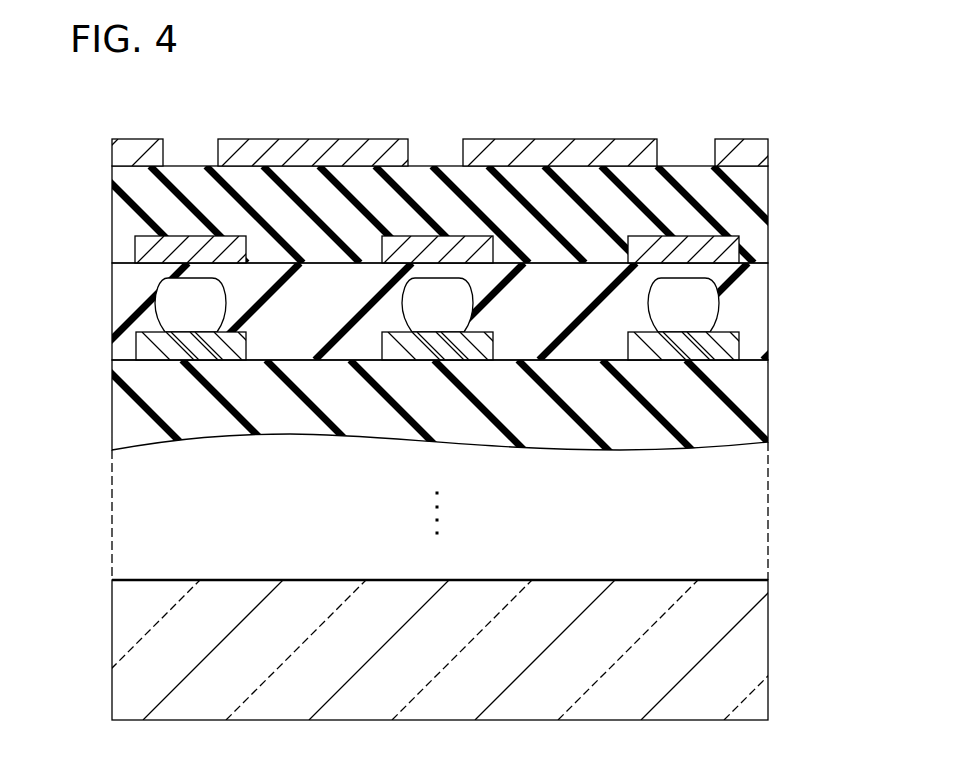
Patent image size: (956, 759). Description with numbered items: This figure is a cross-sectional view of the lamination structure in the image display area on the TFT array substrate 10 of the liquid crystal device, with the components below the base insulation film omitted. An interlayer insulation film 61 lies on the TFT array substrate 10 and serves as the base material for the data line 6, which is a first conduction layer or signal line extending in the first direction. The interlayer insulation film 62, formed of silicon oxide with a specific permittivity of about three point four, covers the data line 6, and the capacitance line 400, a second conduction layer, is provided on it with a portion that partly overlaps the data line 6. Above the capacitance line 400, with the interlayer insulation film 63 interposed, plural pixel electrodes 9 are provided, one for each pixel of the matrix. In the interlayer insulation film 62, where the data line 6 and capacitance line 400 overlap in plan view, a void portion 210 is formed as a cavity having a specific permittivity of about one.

The pixel electrode 9 is at (731, 152).
The interlayer insulation film 63 is at (757, 197).
The capacitance line 400 is at (158, 247).
The interlayer insulation film 62 is at (757, 310).
The void portion 210 is at (160, 310).
The data line 6 is at (148, 350).
The interlayer insulation film 61 is at (757, 400).
The TFT array substrate 10 is at (757, 655).